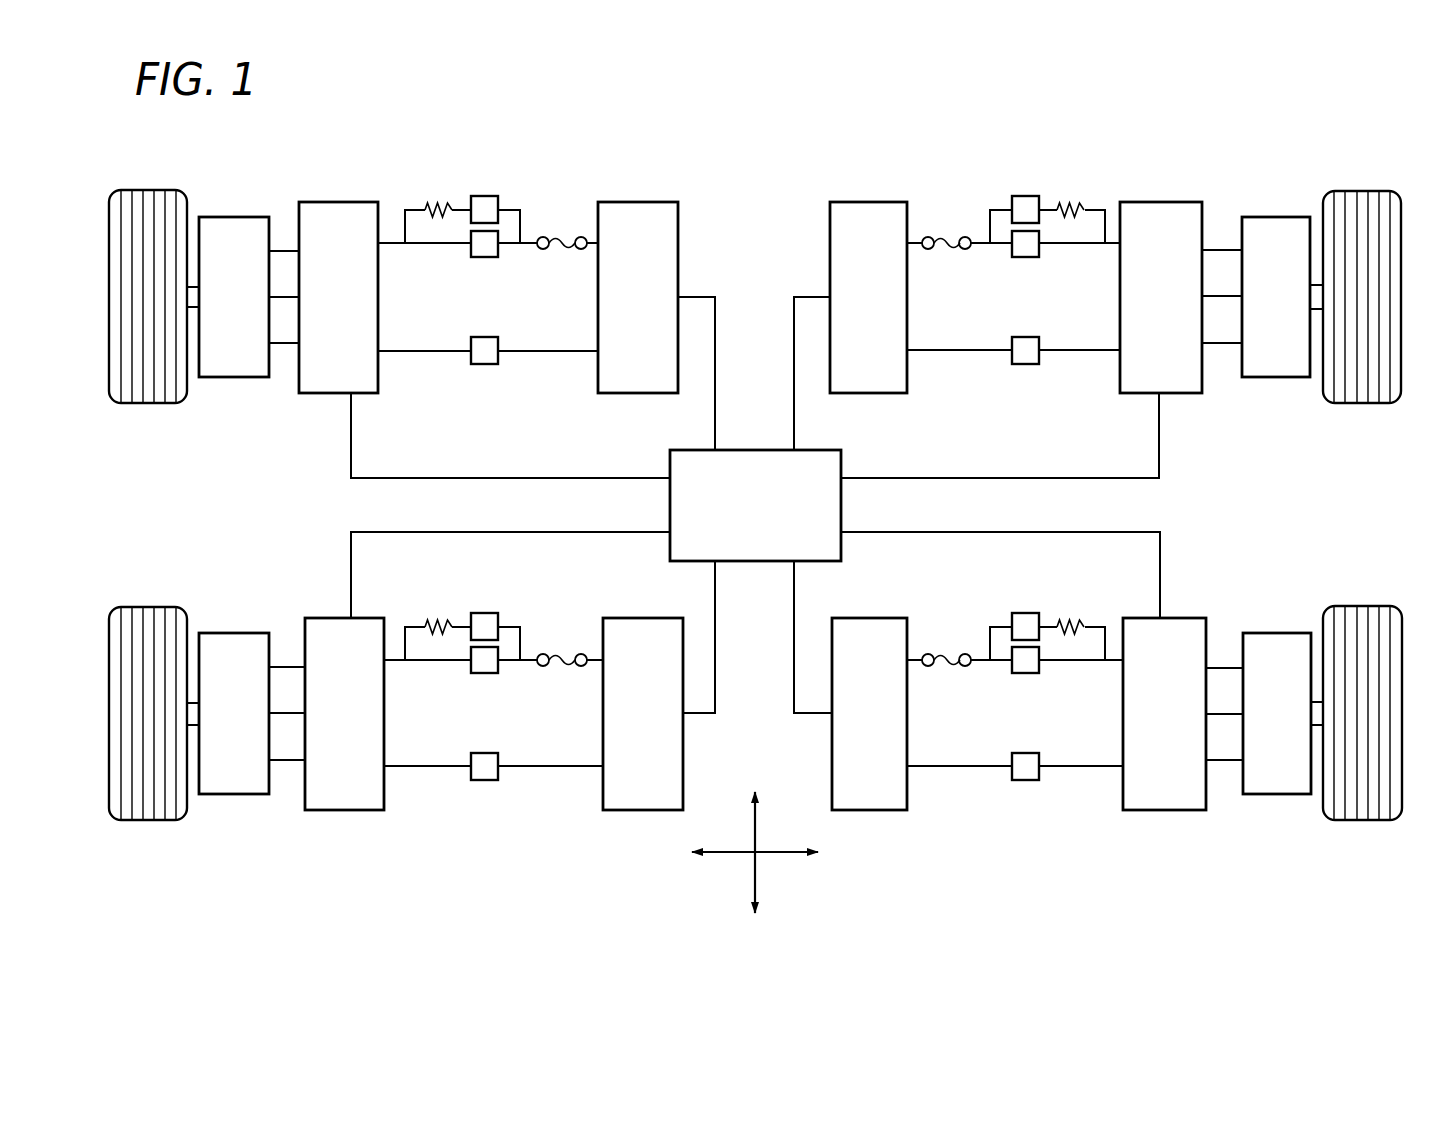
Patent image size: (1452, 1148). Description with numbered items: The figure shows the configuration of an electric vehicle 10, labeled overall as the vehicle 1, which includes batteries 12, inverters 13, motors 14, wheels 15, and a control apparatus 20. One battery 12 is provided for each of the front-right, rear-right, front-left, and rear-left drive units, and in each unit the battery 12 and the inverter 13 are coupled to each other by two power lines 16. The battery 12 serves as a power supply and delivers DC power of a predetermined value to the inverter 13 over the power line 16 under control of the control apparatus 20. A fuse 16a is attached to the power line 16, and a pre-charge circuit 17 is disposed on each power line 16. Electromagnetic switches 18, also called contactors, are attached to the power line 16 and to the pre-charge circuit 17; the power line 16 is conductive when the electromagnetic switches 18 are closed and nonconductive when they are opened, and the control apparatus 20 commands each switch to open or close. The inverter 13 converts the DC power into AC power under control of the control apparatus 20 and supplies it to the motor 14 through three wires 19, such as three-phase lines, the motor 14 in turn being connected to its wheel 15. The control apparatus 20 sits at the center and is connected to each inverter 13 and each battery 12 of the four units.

The vehicle 1 is at (1410, 220).
The electric vehicle 10 is at (705, 168).
The battery 12 is at (877, 200).
The inverter 13 is at (1155, 200).
The motor 14 is at (1259, 215).
The wheel 15 is at (1349, 192).
The power line 16 is at (982, 245).
The fuse 16a is at (948, 232).
The pre-charge circuit 17 is at (993, 200).
The electromagnetic switch 18 is at (1025, 198).
The wire 19 is at (1212, 246).
The control apparatus 20 is at (773, 448).